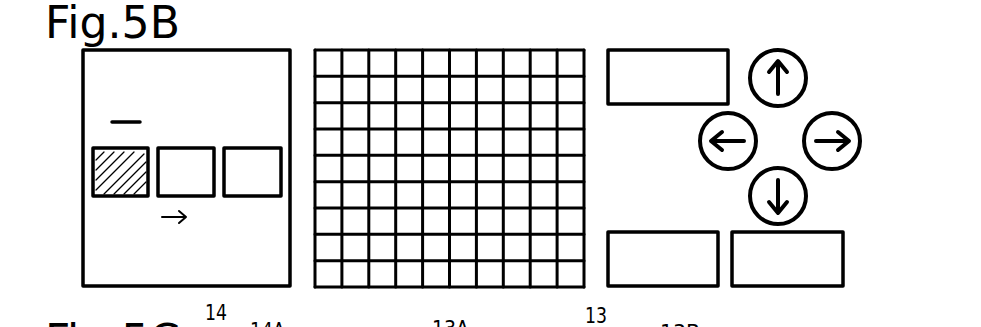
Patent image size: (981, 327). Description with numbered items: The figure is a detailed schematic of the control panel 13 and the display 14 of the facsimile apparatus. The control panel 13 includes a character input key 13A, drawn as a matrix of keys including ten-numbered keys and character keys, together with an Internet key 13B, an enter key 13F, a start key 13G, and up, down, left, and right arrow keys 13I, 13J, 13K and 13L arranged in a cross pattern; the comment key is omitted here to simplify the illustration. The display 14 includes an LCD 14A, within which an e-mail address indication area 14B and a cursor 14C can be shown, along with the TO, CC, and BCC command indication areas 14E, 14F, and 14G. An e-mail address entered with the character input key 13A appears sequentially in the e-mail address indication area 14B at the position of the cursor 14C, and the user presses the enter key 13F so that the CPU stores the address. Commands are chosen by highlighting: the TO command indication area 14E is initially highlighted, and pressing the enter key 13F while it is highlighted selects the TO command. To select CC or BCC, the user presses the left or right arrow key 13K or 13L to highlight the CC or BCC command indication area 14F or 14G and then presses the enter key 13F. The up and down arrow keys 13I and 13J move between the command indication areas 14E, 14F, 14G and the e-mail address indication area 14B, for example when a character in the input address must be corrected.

The control panel 13 is at (618, 35).
The character input key 13A is at (405, 50).
The Internet key 13B is at (650, 50).
The enter key 13F is at (637, 233).
The start key 13G is at (815, 288).
The up arrow key 13I is at (762, 52).
The down arrow key 13J is at (807, 196).
The left arrow key 13K is at (702, 128).
The right arrow key 13L is at (815, 114).
The display 14 is at (208, 40).
The LCD 14A is at (243, 50).
The e-mail address indication area 14B is at (99, 108).
The cursor 14C is at (130, 124).
The TO command indication area 14E is at (92, 190).
The CC command indication area 14F is at (170, 148).
The BCC command indication area 14G is at (227, 148).